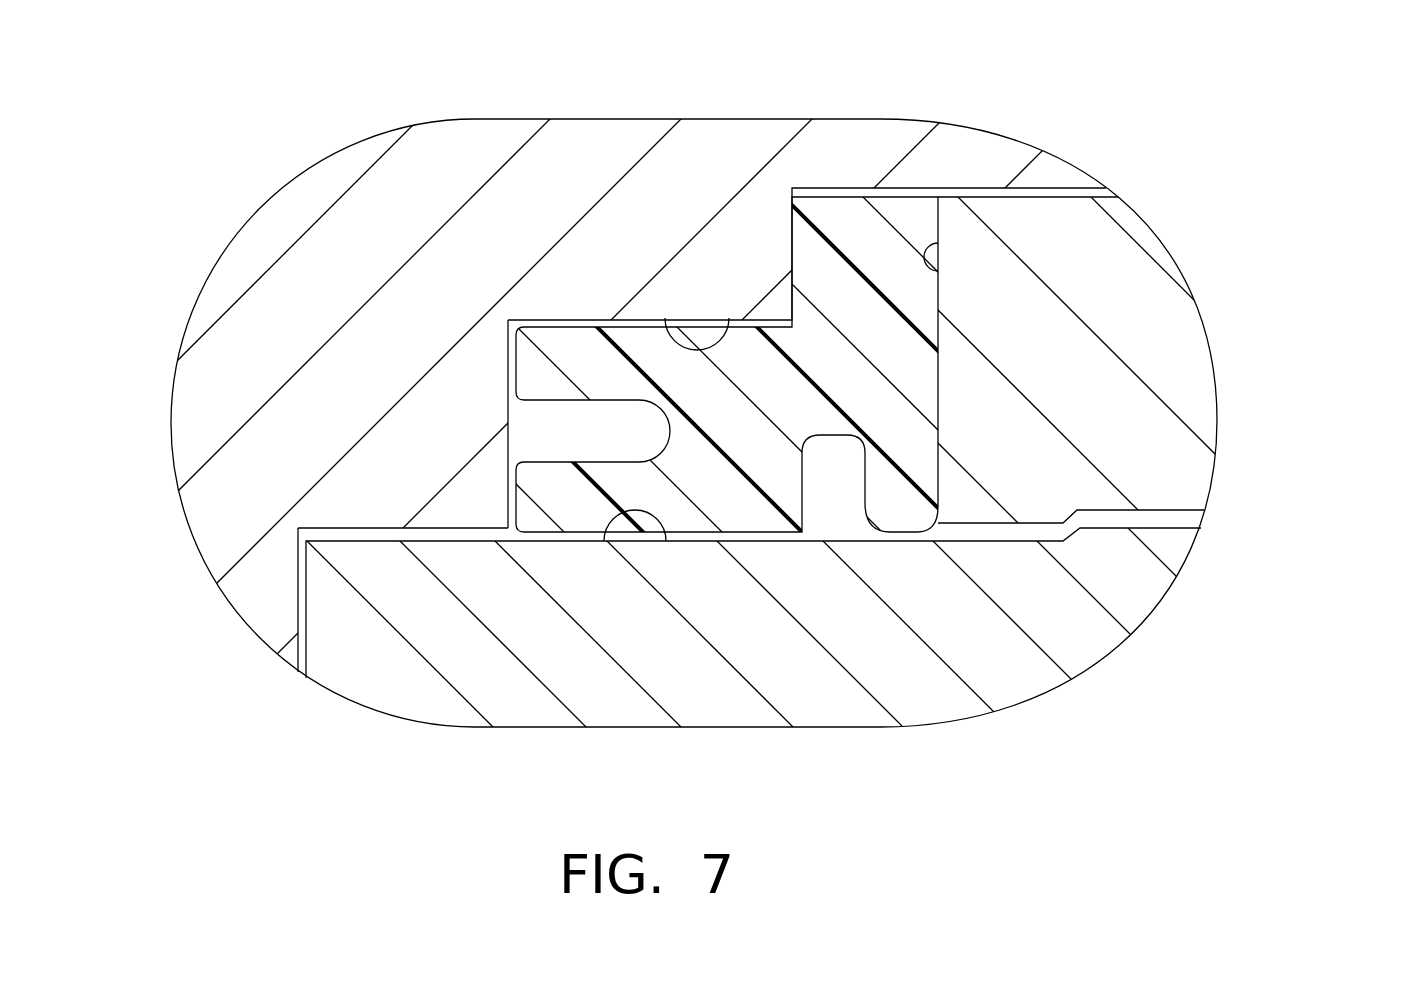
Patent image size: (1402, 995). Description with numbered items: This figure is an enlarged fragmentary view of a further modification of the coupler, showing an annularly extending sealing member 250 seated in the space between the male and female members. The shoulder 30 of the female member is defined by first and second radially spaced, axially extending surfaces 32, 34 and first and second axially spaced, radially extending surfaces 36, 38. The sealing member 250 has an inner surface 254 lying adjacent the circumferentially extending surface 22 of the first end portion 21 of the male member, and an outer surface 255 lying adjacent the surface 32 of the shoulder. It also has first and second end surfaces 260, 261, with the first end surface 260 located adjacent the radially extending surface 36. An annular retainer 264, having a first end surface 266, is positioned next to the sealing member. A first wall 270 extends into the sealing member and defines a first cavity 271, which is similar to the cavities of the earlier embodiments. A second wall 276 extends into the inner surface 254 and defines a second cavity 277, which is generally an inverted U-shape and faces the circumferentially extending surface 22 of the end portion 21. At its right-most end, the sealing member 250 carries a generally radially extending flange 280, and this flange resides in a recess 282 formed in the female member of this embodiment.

The first end portion 21 is at (757, 692).
The circumferentially extending surface 22 is at (625, 518).
The shoulder 30 is at (382, 443).
The first axially extending surface 32 is at (722, 338).
The second axially extending surface 34 is at (430, 528).
The first radially extending surface 36 is at (505, 362).
The second radially extending surface 38 is at (297, 607).
The sealing member 250 is at (570, 353).
The inner surface 254 is at (740, 537).
The outer surface 255 is at (638, 330).
The first end surface 260 is at (562, 312).
The second end surface 261 is at (938, 427).
The annular retainer 264 is at (1118, 328).
The first end surface of retainer 266 is at (942, 240).
The first wall 270 is at (513, 416).
The first cavity 271 is at (585, 439).
The second wall 276 is at (860, 553).
The second cavity 277 is at (849, 516).
The radially extending flange 280 is at (890, 245).
The recess 282 is at (792, 237).